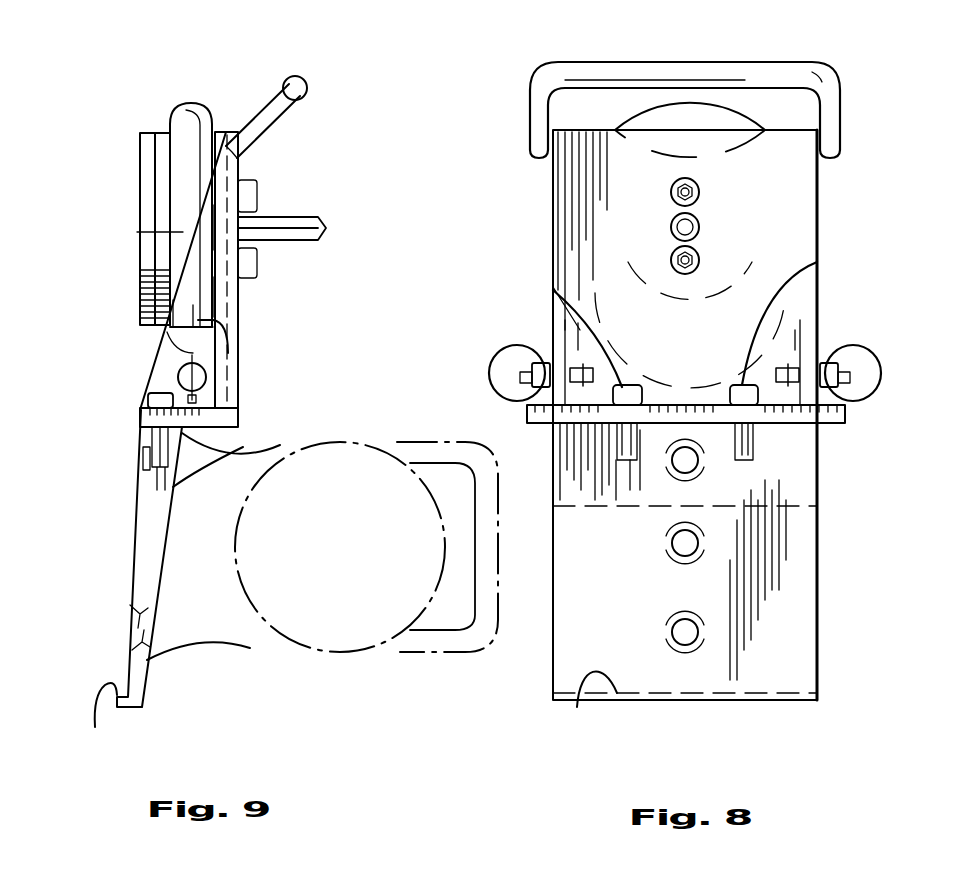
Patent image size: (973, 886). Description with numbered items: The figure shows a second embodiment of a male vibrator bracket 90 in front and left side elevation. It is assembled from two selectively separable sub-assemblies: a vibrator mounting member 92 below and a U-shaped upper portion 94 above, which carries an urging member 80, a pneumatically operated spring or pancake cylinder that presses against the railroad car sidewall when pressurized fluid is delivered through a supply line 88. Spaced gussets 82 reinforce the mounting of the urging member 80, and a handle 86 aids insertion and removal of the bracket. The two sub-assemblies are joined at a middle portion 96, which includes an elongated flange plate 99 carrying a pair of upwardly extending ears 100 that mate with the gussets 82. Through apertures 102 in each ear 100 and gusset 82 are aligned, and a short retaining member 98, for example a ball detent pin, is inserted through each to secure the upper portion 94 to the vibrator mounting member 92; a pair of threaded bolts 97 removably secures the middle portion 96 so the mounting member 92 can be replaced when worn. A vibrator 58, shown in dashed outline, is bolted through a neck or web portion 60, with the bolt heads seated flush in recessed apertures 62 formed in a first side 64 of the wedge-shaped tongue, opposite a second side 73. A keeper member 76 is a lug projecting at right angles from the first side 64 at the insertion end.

In FIG. 9, the vibrator 58 is at (422, 613).
In FIG. 9, the neck or web portion 60 is at (213, 615).
In FIG. 9, the recessed apertures 62 is at (140, 547).
In FIG. 8, the recessed apertures 62 is at (698, 548).
In FIG. 9, the first side 64 is at (127, 588).
In FIG. 9, the second side 73 is at (243, 447).
In FIG. 9, the keeper member 76 is at (102, 719).
In FIG. 8, the keeper member 76 is at (588, 703).
In FIG. 9, the urging member 80 is at (142, 133).
In FIG. 8, the urging member 80 is at (767, 172).
In FIG. 9, the gussets 82 is at (137, 232).
In FIG. 8, the gussets 82 is at (553, 210).
In FIG. 9, the handle 86 is at (268, 97).
In FIG. 8, the handle 86 is at (600, 62).
In FIG. 9, the supply line 88 is at (297, 217).
In FIG. 9, the vibrator bracket 90 is at (317, 108).
In FIG. 8, the vibrator bracket 90 is at (537, 640).
In FIG. 9, the vibrator mounting member 92 is at (122, 637).
In FIG. 8, the vibrator mounting member 92 is at (805, 613).
In FIG. 9, the upper portion 94 is at (263, 307).
In FIG. 8, the upper portion 94 is at (523, 180).
In FIG. 9, the middle portion 96 is at (262, 404).
In FIG. 8, the middle portion 96 is at (860, 425).
In FIG. 8, the threaded bolts 97 is at (572, 333).
In FIG. 9, the retaining member 98 is at (177, 370).
In FIG. 8, the retaining member 98 is at (530, 373).
In FIG. 9, the elongated flange plate 99 is at (140, 418).
In FIG. 8, the elongated flange plate 99 is at (527, 413).
In FIG. 9, the ears 100 is at (230, 352).
In FIG. 8, the ears 100 is at (557, 332).
In FIG. 8, the apertures 102 is at (553, 360).